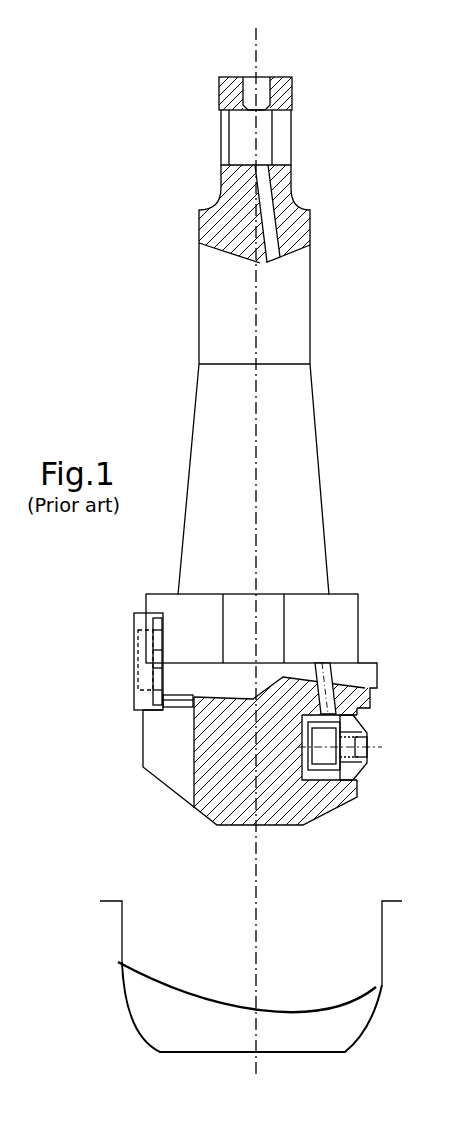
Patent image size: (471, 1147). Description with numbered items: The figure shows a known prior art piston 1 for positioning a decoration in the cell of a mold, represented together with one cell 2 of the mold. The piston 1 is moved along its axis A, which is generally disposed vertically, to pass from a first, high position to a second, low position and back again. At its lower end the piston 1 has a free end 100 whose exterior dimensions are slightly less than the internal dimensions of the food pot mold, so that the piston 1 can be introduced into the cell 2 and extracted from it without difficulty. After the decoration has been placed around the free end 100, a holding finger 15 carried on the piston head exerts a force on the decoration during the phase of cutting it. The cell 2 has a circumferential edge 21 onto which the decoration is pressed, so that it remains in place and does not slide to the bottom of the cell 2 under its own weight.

The axis A is at (265, 52).
The piston 1 is at (198, 310).
The free end 100 is at (249, 709).
The holding finger 15 is at (373, 731).
The cell 2 is at (279, 1010).
The circumferential edge 21 is at (311, 1015).